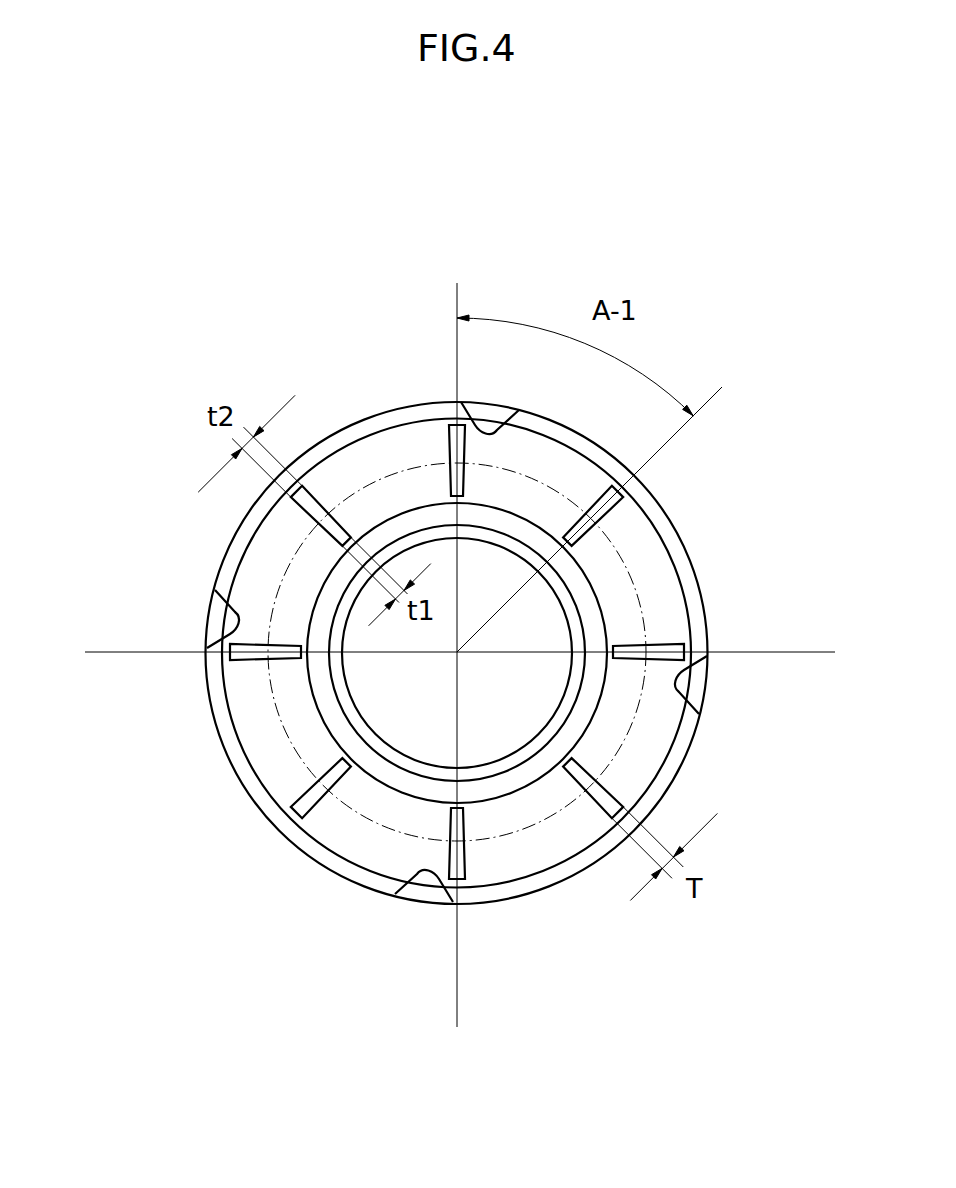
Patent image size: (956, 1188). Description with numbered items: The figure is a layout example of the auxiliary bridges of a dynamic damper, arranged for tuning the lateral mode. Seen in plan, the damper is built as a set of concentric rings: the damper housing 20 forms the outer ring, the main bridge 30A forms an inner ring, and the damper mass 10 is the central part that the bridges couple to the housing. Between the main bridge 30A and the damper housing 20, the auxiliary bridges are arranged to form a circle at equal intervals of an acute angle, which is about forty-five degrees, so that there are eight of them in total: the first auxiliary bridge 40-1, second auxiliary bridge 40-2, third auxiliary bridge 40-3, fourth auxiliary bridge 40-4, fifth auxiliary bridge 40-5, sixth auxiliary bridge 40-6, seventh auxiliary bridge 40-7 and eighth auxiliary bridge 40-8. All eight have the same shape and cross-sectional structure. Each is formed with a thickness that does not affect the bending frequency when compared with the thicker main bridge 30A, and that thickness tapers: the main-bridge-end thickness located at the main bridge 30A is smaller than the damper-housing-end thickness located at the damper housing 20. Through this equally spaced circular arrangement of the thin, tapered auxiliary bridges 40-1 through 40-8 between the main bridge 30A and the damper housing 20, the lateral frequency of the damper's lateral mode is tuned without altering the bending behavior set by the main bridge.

The damper mass 10 is at (222, 620).
The damper housing 20 is at (230, 548).
The main bridge 30A is at (400, 760).
The first auxiliary bridge 40-1 is at (450, 432).
The second auxiliary bridge 40-2 is at (618, 506).
The third auxiliary bridge 40-3 is at (668, 650).
The fourth auxiliary bridge 40-4 is at (610, 793).
The fifth auxiliary bridge 40-5 is at (465, 873).
The sixth auxiliary bridge 40-6 is at (297, 808).
The seventh auxiliary bridge 40-7 is at (237, 657).
The eighth auxiliary bridge 40-8 is at (320, 497).